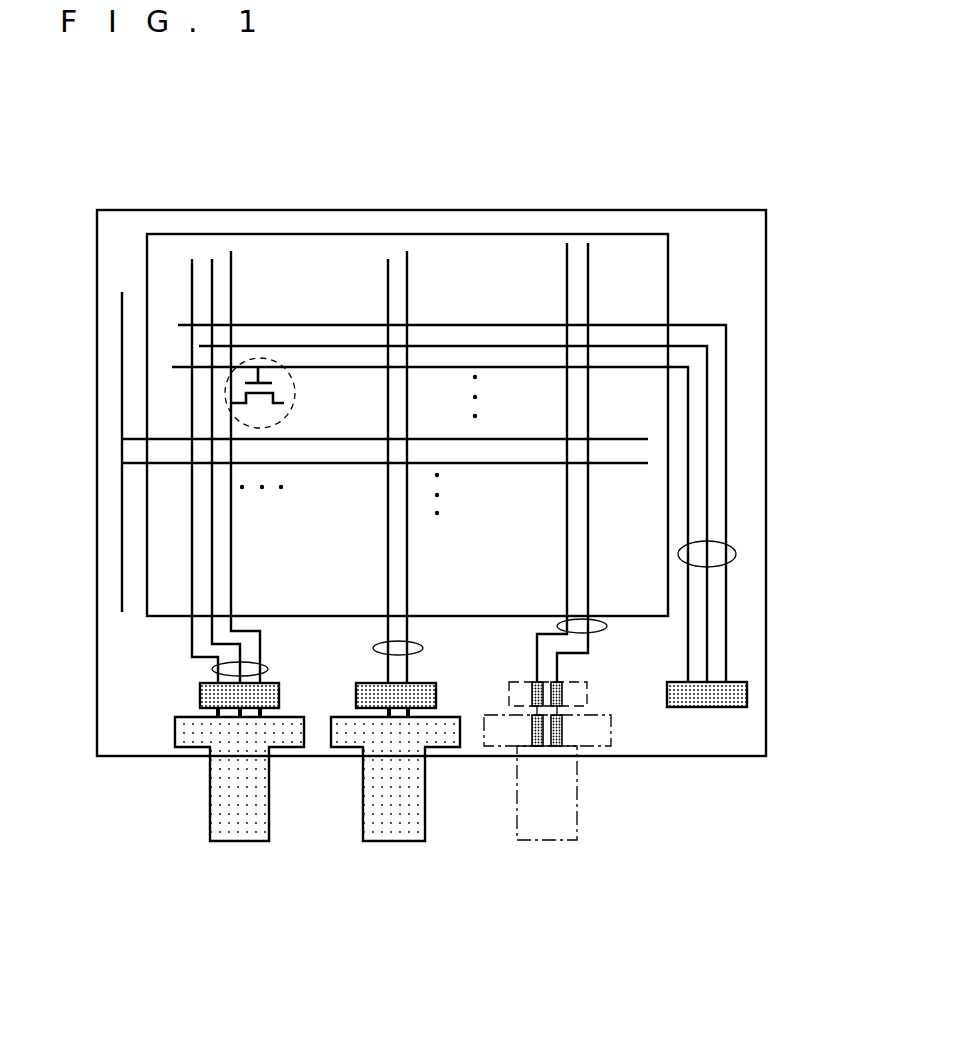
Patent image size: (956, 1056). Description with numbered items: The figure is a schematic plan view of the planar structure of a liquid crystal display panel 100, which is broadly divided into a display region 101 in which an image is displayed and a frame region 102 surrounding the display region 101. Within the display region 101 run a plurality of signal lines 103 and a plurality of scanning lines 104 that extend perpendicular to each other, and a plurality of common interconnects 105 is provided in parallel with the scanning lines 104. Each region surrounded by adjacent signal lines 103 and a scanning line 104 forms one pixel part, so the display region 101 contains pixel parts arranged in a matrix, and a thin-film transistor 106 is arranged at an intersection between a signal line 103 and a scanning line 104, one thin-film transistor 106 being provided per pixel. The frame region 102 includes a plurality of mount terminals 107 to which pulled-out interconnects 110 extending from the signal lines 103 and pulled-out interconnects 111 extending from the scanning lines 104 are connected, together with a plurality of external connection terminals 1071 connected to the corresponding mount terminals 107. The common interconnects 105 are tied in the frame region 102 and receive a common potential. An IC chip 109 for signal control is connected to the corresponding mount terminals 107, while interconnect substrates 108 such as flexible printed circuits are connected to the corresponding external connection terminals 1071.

The liquid crystal display panel 100 is at (774, 186).
The display region 101 is at (622, 257).
The frame region 102 is at (748, 275).
The signal line 103 is at (232, 567).
The scanning line 104 is at (335, 366).
The common interconnect 105 is at (508, 463).
The thin-film transistor 106 is at (222, 391).
The mount terminal 107 is at (587, 697).
The external connection terminal 1071 is at (563, 732).
The interconnect substrate 108 is at (237, 842).
The IC chip 109 is at (272, 683).
The pulled-out interconnect 110 is at (212, 669).
The pulled-out interconnect 111 is at (736, 554).